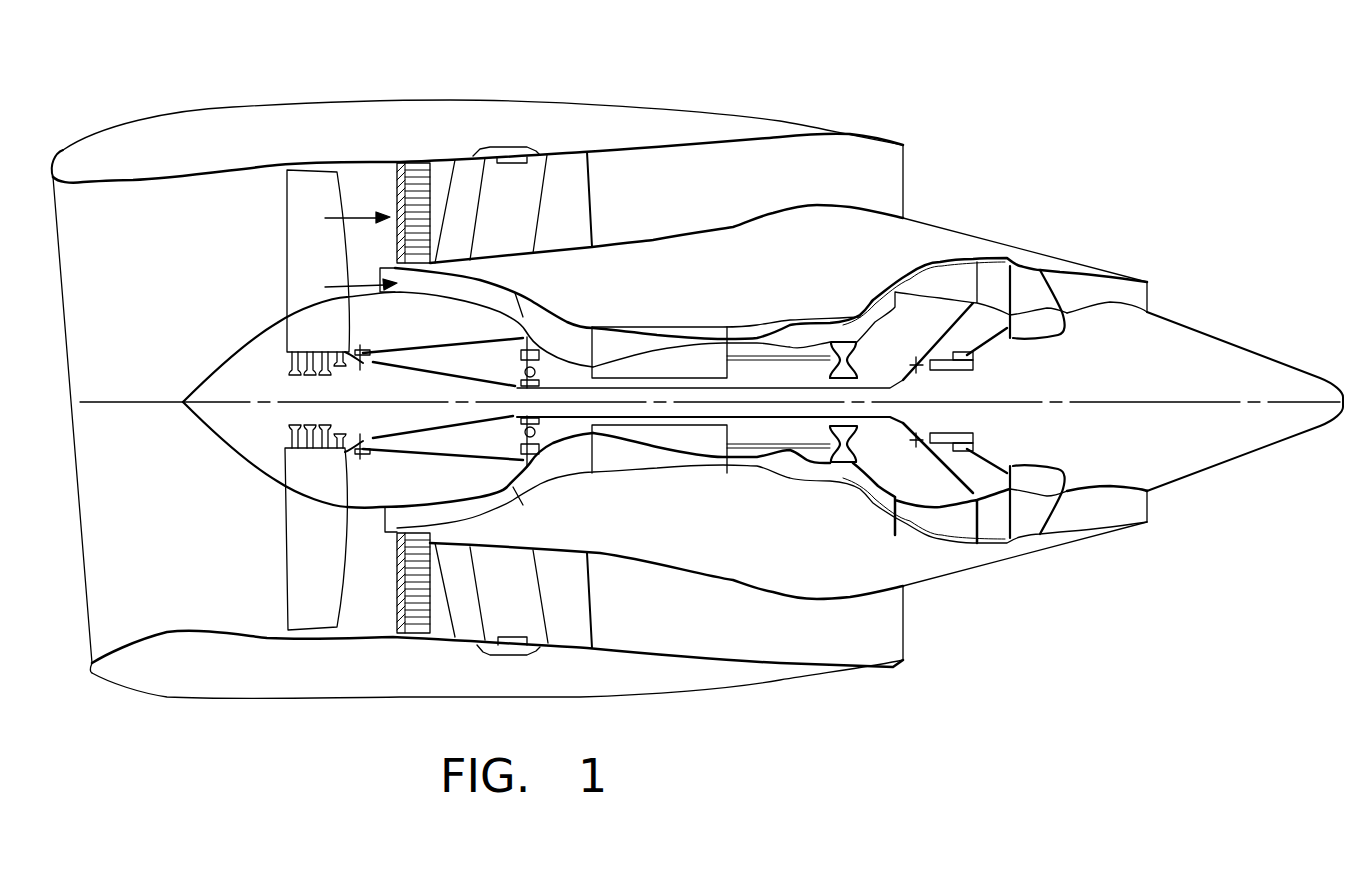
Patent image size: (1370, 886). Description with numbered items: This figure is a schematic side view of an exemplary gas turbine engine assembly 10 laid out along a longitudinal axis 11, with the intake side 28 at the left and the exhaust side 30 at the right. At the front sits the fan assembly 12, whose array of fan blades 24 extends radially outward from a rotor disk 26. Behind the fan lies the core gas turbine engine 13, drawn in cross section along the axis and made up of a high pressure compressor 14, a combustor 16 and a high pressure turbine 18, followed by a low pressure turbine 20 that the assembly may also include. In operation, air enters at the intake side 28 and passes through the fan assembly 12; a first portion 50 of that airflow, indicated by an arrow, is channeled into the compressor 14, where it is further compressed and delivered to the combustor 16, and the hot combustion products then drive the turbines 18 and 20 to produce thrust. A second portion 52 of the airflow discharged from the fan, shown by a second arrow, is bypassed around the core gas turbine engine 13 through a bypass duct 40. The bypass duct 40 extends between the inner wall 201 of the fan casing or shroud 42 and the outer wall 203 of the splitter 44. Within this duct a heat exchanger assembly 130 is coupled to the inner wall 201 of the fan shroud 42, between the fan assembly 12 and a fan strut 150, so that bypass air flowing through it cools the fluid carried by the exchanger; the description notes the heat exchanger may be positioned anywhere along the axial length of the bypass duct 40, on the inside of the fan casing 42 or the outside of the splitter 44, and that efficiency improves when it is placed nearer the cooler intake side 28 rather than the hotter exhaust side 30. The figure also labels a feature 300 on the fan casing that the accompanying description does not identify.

The gas turbine engine assembly 10 is at (822, 52).
The longitudinal axis 11 is at (120, 395).
The fan assembly 12 is at (300, 566).
The core gas turbine engine 13 is at (1008, 212).
The high pressure compressor 14 is at (608, 340).
The combustor 16 is at (794, 340).
The high pressure turbine 18 is at (835, 485).
The low pressure turbine 20 is at (933, 283).
The fan blades 24 is at (307, 215).
The rotor disk 26 is at (317, 404).
The intake side 28 is at (85, 630).
The exhaust side 30 is at (928, 153).
The bypass duct 40 is at (686, 214).
The fan casing 42 is at (612, 105).
The splitter 44 is at (775, 215).
The first portion of the airflow 50 is at (362, 282).
The second portion of the airflow 52 is at (355, 215).
The heat exchanger assembly 130 is at (415, 165).
The fan strut 150 is at (588, 172).
The inner wall 201 is at (717, 152).
The outer wall 203 is at (935, 217).
The sensor assembly 300 is at (515, 148).